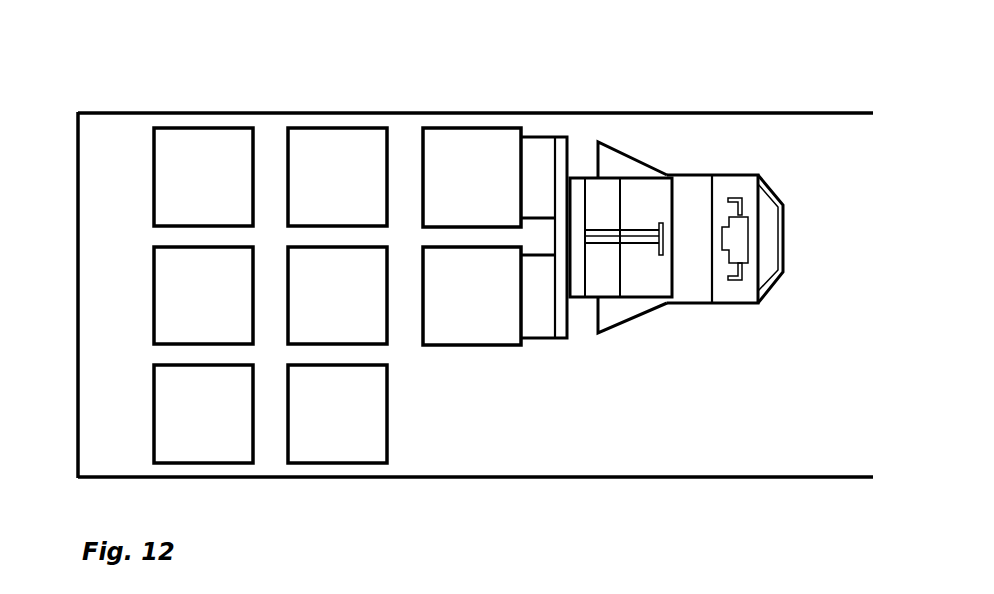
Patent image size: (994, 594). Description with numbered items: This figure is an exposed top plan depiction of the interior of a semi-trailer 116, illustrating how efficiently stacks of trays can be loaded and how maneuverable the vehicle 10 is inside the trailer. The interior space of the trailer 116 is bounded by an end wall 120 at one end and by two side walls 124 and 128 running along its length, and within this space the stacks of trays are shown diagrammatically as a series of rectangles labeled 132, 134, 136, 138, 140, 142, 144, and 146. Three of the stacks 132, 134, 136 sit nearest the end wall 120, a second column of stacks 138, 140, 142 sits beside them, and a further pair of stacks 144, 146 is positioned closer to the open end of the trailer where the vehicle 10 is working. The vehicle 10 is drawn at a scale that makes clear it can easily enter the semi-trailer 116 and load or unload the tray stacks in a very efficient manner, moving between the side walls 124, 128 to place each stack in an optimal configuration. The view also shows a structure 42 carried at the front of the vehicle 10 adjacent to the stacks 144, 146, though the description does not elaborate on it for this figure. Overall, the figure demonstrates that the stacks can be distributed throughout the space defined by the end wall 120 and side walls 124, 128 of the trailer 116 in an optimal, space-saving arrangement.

The vehicle 10 is at (718, 303).
The mounting plate 42 is at (540, 315).
The semi-trailer 116 is at (441, 284).
The end wall 120 is at (77, 272).
The side wall 124 is at (424, 113).
The side wall 128 is at (618, 480).
The tray stack 132 is at (203, 177).
The tray stack 134 is at (203, 295).
The tray stack 136 is at (203, 414).
The tray stack 138 is at (337, 177).
The tray stack 140 is at (337, 295).
The tray stack 142 is at (337, 414).
The tray stack 144 is at (472, 177).
The tray stack 146 is at (472, 296).